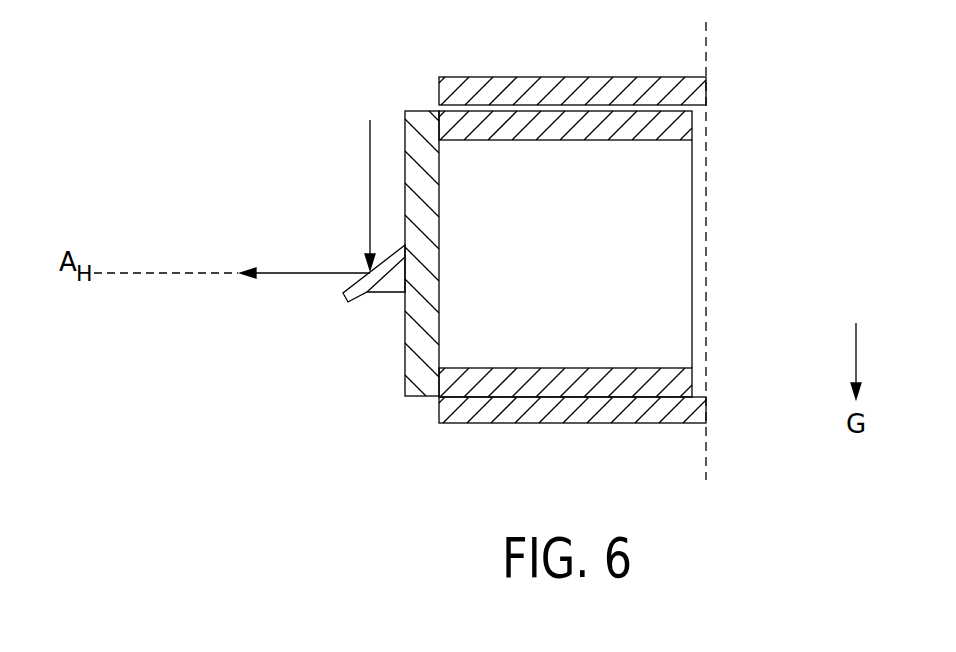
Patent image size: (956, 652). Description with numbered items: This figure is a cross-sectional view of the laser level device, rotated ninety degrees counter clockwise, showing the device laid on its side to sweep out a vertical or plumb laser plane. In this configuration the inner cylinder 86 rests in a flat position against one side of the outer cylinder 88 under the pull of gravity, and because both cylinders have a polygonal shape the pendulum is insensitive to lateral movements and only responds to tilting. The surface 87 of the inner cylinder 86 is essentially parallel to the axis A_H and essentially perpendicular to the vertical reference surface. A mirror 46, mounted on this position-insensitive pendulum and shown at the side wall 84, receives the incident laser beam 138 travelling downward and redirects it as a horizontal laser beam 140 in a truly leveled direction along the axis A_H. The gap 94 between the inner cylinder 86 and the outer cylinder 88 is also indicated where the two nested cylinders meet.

The mirror 46 is at (347, 303).
The side wall 84 is at (408, 381).
The inner cylinder 86 is at (665, 142).
The surface 87 is at (568, 397).
The outer cylinder 88 is at (673, 90).
The gap 94 is at (692, 108).
The incident laser beam 138 is at (370, 158).
The horizontal laser beam 140 is at (287, 276).